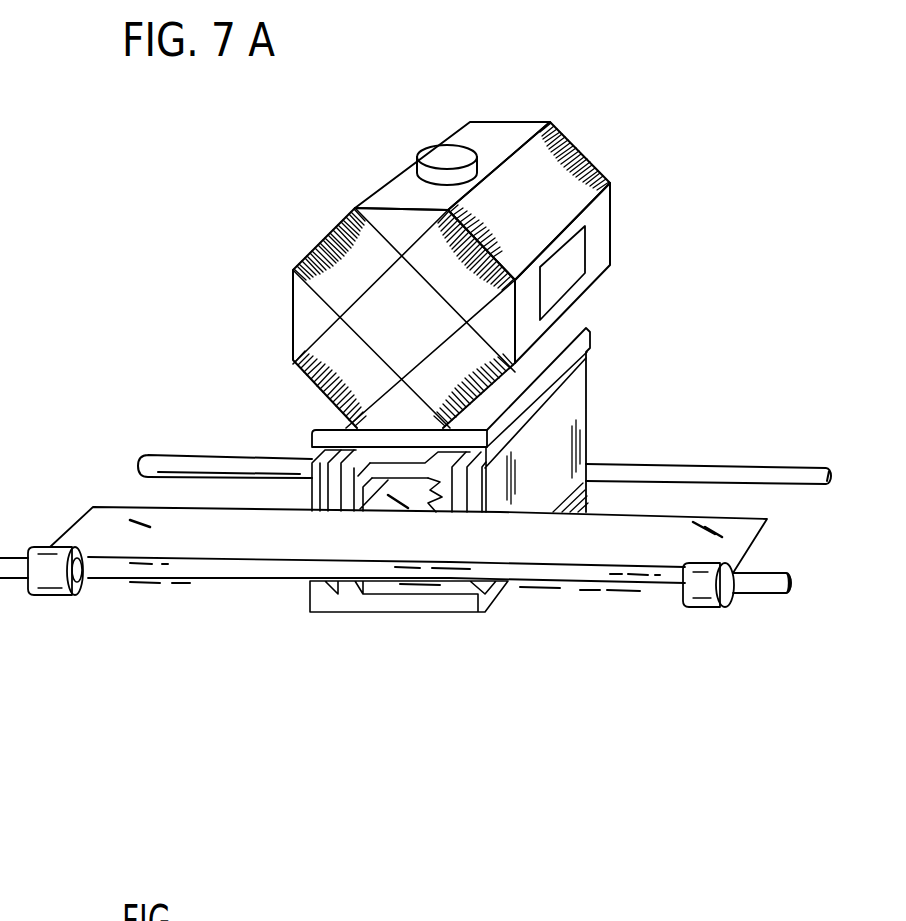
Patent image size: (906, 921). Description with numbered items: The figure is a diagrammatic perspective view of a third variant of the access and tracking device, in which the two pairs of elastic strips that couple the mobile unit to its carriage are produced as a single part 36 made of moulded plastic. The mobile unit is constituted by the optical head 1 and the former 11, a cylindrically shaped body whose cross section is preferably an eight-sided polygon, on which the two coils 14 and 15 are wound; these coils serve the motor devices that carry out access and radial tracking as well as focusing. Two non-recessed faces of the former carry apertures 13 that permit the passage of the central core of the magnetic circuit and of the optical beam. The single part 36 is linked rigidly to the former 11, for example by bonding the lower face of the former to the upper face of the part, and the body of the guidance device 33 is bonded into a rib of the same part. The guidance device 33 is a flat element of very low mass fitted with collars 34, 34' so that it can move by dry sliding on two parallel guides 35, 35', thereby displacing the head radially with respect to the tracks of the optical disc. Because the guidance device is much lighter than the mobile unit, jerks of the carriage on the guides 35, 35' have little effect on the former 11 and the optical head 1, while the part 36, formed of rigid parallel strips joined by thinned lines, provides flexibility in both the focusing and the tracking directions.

The optical head 1 is at (437, 153).
The former 11 is at (543, 102).
The apertures 13 is at (570, 277).
The coil 14 is at (330, 236).
The coil 15 is at (598, 168).
The guidance device 33 is at (103, 506).
The collar 34 is at (49, 602).
The collar 34' is at (708, 614).
The guide 35 is at (405, 611).
The guide 35' is at (484, 444).
The single part 36 is at (583, 398).